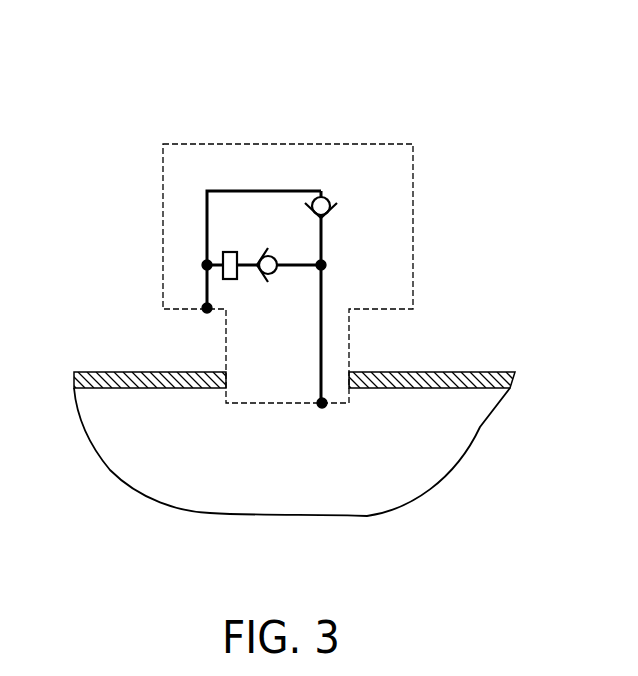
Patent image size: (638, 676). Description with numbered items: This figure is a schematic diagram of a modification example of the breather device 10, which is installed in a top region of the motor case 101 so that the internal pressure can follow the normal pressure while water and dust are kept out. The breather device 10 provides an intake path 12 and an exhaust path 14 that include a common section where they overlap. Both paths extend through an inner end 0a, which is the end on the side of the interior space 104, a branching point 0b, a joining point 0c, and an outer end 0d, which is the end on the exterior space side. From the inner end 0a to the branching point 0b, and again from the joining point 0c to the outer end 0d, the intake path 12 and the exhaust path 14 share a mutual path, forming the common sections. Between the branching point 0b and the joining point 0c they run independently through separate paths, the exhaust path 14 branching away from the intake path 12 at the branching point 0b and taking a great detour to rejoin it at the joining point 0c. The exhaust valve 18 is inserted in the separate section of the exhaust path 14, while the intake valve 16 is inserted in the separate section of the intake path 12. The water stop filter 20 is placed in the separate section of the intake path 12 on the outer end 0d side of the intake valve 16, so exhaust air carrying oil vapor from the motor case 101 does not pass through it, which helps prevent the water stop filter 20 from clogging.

The breather device 10 is at (397, 144).
The intake path 12 is at (292, 268).
The exhaust path 14 is at (262, 191).
The intake valve 16 is at (265, 282).
The exhaust valve 18 is at (333, 212).
The water stop filter 20 is at (230, 252).
The inner end 0a is at (322, 403).
The branching point 0b is at (326, 265).
The joining point 0c is at (204, 265).
The outer end 0d is at (204, 311).
The motor case 101 is at (493, 369).
The interior space 104 is at (292, 452).